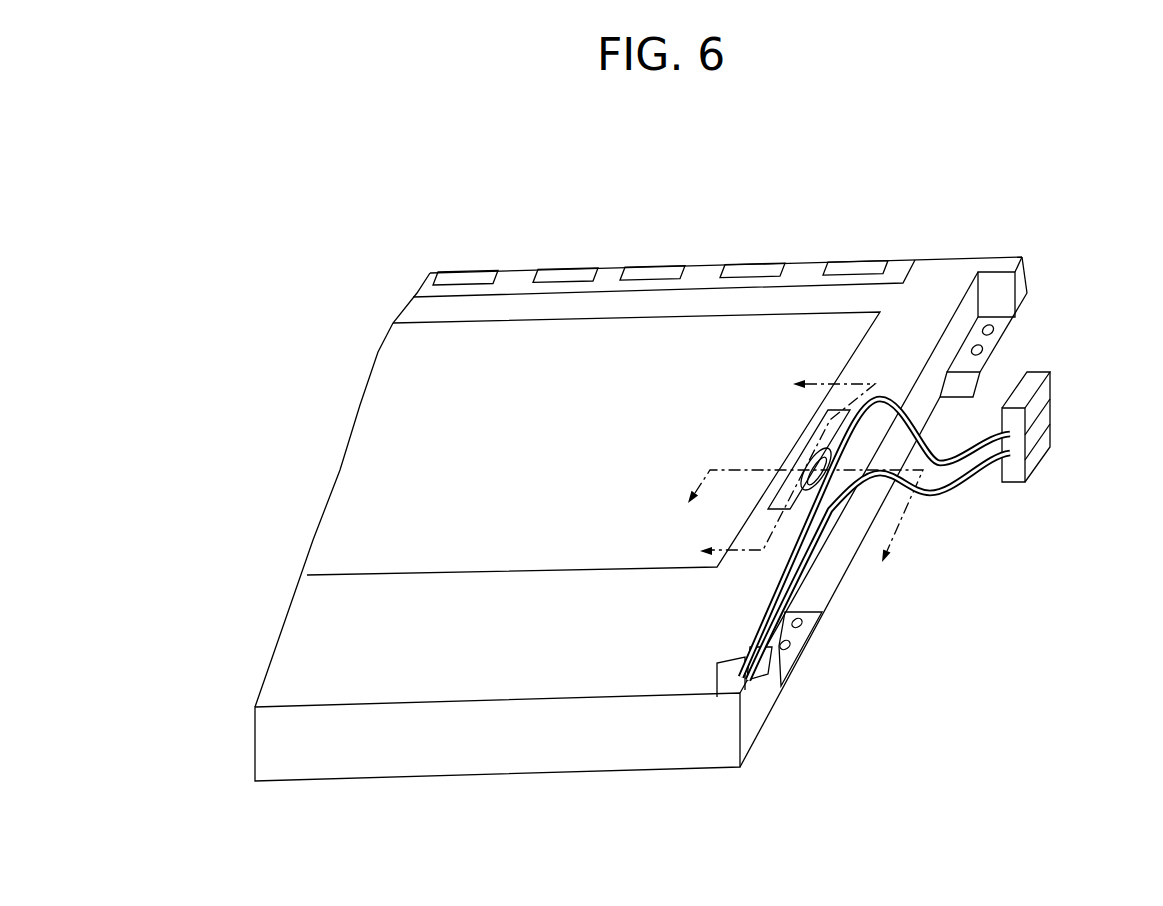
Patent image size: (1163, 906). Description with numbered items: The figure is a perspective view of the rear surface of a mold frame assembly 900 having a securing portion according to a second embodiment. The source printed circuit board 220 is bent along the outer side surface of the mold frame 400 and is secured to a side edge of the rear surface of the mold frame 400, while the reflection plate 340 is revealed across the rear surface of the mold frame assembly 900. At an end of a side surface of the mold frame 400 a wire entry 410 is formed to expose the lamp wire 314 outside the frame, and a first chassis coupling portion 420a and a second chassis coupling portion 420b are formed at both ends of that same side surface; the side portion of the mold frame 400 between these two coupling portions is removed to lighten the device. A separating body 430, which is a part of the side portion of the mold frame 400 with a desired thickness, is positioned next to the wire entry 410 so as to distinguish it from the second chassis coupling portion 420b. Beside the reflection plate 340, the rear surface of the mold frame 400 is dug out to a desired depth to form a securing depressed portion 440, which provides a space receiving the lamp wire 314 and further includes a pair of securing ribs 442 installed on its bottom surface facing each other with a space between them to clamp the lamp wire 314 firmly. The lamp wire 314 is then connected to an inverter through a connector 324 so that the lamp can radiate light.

The mold frame assembly 900 is at (676, 511).
The mold frame 400 is at (457, 770).
The reflection plate 340 is at (340, 467).
The source printed circuit board 220 is at (430, 272).
The wire entry 410 is at (737, 667).
The first chassis coupling portion 420a is at (992, 343).
The second chassis coupling portion 420b is at (800, 637).
The separating body 430 is at (772, 667).
The securing depressed portion 440 is at (818, 455).
The securing ribs 442 is at (826, 480).
The lamp wire 314 is at (953, 488).
The connector 324 is at (1040, 453).